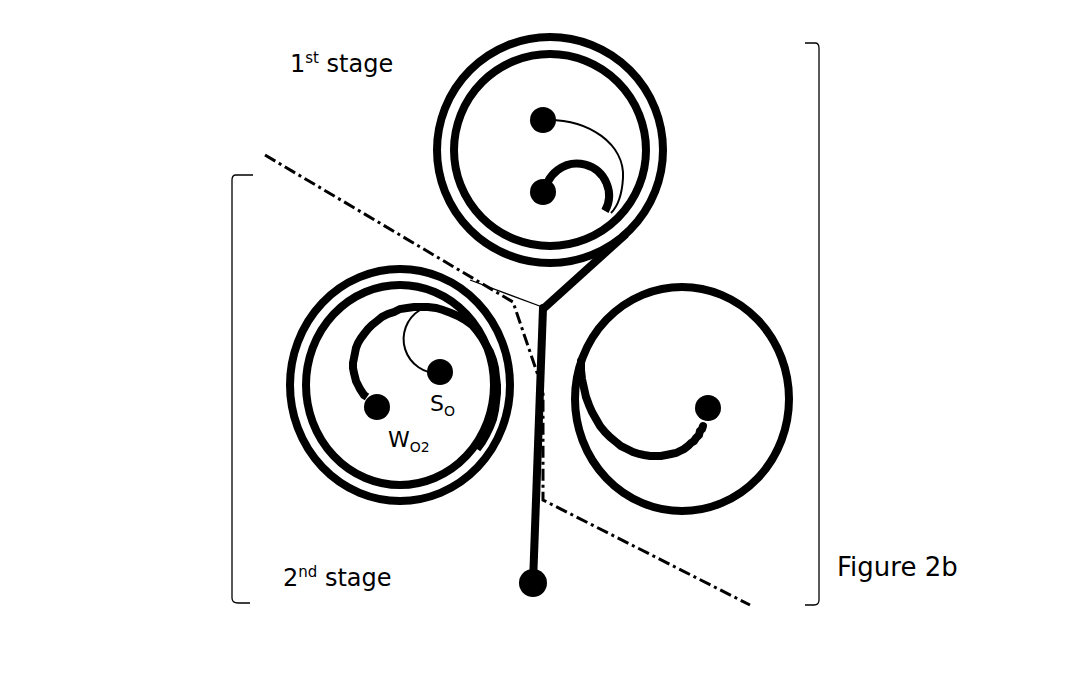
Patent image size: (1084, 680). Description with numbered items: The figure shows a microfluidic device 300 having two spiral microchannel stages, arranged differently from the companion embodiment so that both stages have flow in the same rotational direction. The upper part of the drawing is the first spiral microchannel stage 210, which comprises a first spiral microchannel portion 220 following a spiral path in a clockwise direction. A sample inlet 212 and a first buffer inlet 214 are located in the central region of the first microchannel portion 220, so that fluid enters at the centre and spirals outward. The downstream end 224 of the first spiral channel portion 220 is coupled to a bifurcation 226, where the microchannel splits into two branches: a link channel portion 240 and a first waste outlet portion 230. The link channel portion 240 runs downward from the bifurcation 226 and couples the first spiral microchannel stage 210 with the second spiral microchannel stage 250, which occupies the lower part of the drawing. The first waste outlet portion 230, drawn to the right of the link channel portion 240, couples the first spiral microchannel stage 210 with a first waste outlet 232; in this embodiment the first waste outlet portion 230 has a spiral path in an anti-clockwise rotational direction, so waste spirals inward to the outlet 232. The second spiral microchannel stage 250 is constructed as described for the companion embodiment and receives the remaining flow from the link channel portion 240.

The microfluidic device 300 is at (200, 118).
The first spiral microchannel stage 210 is at (819, 325).
The sample inlet 212 is at (537, 113).
The first buffer inlet 214 is at (532, 186).
The first spiral microchannel portion 220 is at (662, 100).
The downstream end 224 is at (620, 260).
The bifurcation 226 is at (545, 308).
The first waste outlet portion 230 is at (728, 500).
The first waste outlet 232 is at (698, 407).
The link channel portion 240 is at (541, 312).
The second spiral microchannel stage 250 is at (230, 388).